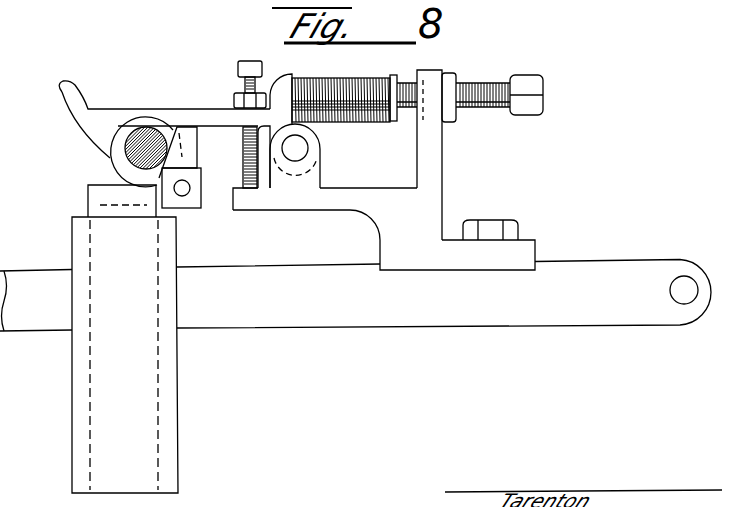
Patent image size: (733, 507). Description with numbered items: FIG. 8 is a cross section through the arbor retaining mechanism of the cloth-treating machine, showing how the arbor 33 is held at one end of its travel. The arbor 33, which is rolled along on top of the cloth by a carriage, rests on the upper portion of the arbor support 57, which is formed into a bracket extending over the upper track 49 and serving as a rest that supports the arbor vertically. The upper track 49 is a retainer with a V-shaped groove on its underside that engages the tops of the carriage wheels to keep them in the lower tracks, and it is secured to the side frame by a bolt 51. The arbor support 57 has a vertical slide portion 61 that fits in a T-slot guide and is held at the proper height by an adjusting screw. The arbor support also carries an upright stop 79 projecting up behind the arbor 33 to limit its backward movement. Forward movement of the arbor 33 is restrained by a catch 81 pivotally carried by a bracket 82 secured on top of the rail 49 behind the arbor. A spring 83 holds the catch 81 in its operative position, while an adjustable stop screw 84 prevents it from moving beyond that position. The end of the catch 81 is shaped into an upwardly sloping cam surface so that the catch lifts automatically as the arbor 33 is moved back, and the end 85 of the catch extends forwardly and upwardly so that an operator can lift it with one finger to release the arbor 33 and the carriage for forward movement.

The arbor 33 is at (137, 158).
The upper track 49 is at (588, 273).
The bolt 51 is at (683, 280).
The arbor support 57 is at (100, 197).
The vertical slide portion 61 is at (82, 372).
The upright stop 79 is at (188, 153).
The catch 81 is at (189, 115).
The bracket 82 is at (436, 202).
The spring 83 is at (328, 93).
The adjustable stop screw 84 is at (248, 167).
The end of the catch 85 is at (70, 85).